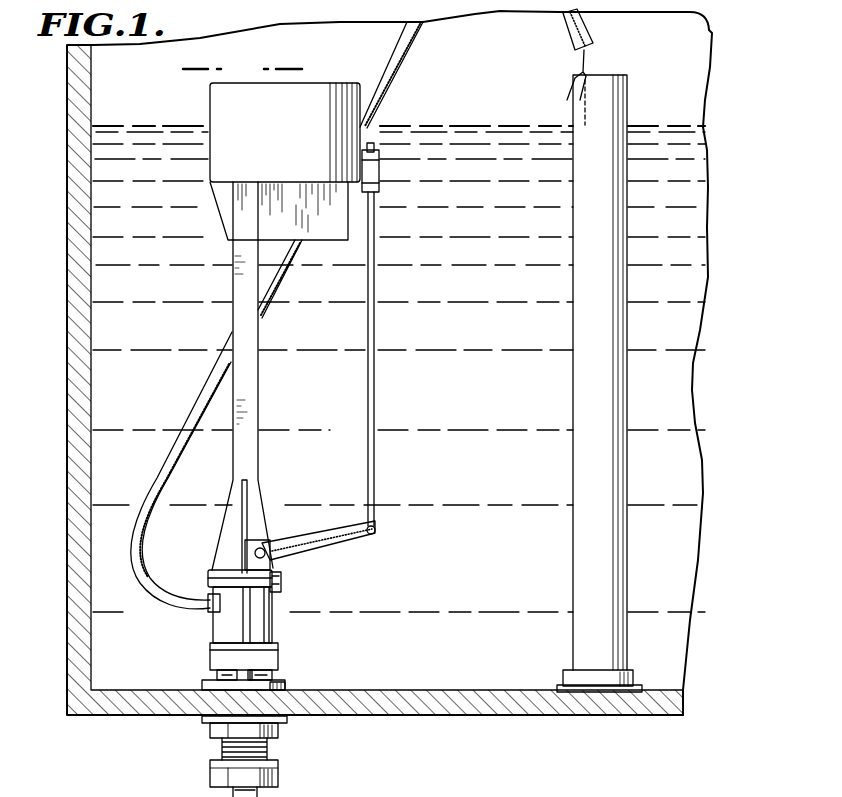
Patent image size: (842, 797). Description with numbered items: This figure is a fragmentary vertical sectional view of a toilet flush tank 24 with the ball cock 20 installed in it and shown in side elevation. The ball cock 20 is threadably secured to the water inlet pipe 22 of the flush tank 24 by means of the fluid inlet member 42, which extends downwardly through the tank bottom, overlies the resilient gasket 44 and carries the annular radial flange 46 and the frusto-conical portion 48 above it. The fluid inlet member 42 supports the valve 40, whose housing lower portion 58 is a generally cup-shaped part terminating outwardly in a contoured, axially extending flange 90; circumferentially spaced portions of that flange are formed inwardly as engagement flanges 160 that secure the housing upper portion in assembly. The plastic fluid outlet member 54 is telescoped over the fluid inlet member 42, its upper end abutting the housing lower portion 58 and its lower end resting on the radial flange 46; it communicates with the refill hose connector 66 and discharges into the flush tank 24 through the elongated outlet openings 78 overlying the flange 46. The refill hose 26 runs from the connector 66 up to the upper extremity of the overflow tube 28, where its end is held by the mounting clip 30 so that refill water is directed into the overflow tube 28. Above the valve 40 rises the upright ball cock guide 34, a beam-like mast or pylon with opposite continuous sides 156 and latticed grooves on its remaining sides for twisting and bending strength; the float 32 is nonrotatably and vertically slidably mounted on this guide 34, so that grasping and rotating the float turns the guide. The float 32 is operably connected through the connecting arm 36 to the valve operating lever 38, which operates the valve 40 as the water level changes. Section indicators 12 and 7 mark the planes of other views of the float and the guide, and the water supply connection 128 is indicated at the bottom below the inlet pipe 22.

The section line 7- 7 is at (333, 446).
The section line 12- 12 is at (196, 60).
The ball cock 20 is at (219, 256).
The water inlet pipe 22 is at (262, 795).
The toilet flush tank 24 is at (69, 481).
The refill hose 26 is at (191, 403).
The overflow tube 28 is at (603, 492).
The mounting clip 30 is at (587, 58).
The float 32 is at (214, 100).
The ball cock guide 34 is at (242, 314).
The connecting arm 36 is at (373, 380).
The valve operating lever 38 is at (327, 538).
The valve 40 is at (292, 594).
The fluid inlet member 42 is at (222, 742).
The resilient gasket 44 is at (203, 687).
The annular radial flange 46 is at (280, 681).
The frusto-conical portion 48 is at (222, 672).
The fluid outlet member 54 is at (215, 648).
The housing lower portion 58 is at (210, 577).
The refill hose connector 66 is at (214, 609).
The elongated outlet openings 78 is at (275, 672).
The axially extending flange 90 is at (280, 573).
The shank 128 is at (213, 793).
The continuous sides 156 is at (247, 341).
The engagement flanges 160 is at (240, 572).